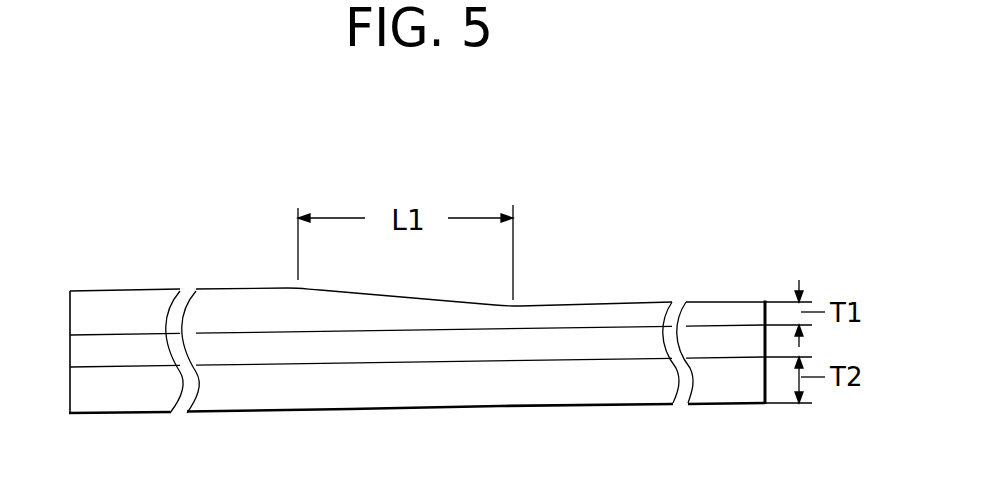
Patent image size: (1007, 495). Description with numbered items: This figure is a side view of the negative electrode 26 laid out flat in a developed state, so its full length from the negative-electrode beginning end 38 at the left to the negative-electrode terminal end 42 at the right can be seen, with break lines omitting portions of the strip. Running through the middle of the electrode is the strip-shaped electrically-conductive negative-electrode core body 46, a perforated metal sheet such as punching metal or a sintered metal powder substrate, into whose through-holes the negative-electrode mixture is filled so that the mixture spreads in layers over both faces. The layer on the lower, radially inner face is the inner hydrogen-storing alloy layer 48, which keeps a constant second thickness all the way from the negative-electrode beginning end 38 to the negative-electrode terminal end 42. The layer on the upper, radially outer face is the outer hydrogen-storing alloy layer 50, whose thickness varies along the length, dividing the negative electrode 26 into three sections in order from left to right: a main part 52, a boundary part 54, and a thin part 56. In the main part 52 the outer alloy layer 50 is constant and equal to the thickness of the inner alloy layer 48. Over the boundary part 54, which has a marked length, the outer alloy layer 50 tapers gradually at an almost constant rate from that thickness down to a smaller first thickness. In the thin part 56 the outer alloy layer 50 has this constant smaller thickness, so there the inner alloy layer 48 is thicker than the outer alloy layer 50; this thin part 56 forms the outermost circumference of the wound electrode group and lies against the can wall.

The negative electrode 26 is at (698, 188).
The negative-electrode beginning end 38 is at (95, 400).
The negative-electrode terminal end 42 is at (758, 390).
The negative-electrode core body 46 is at (743, 337).
The inner hydrogen-storing alloy layer 48 is at (710, 390).
The outer hydrogen-storing alloy layer 50 is at (708, 308).
The main part 52 is at (248, 398).
The boundary part 54 is at (412, 395).
The thin part 56 is at (582, 392).